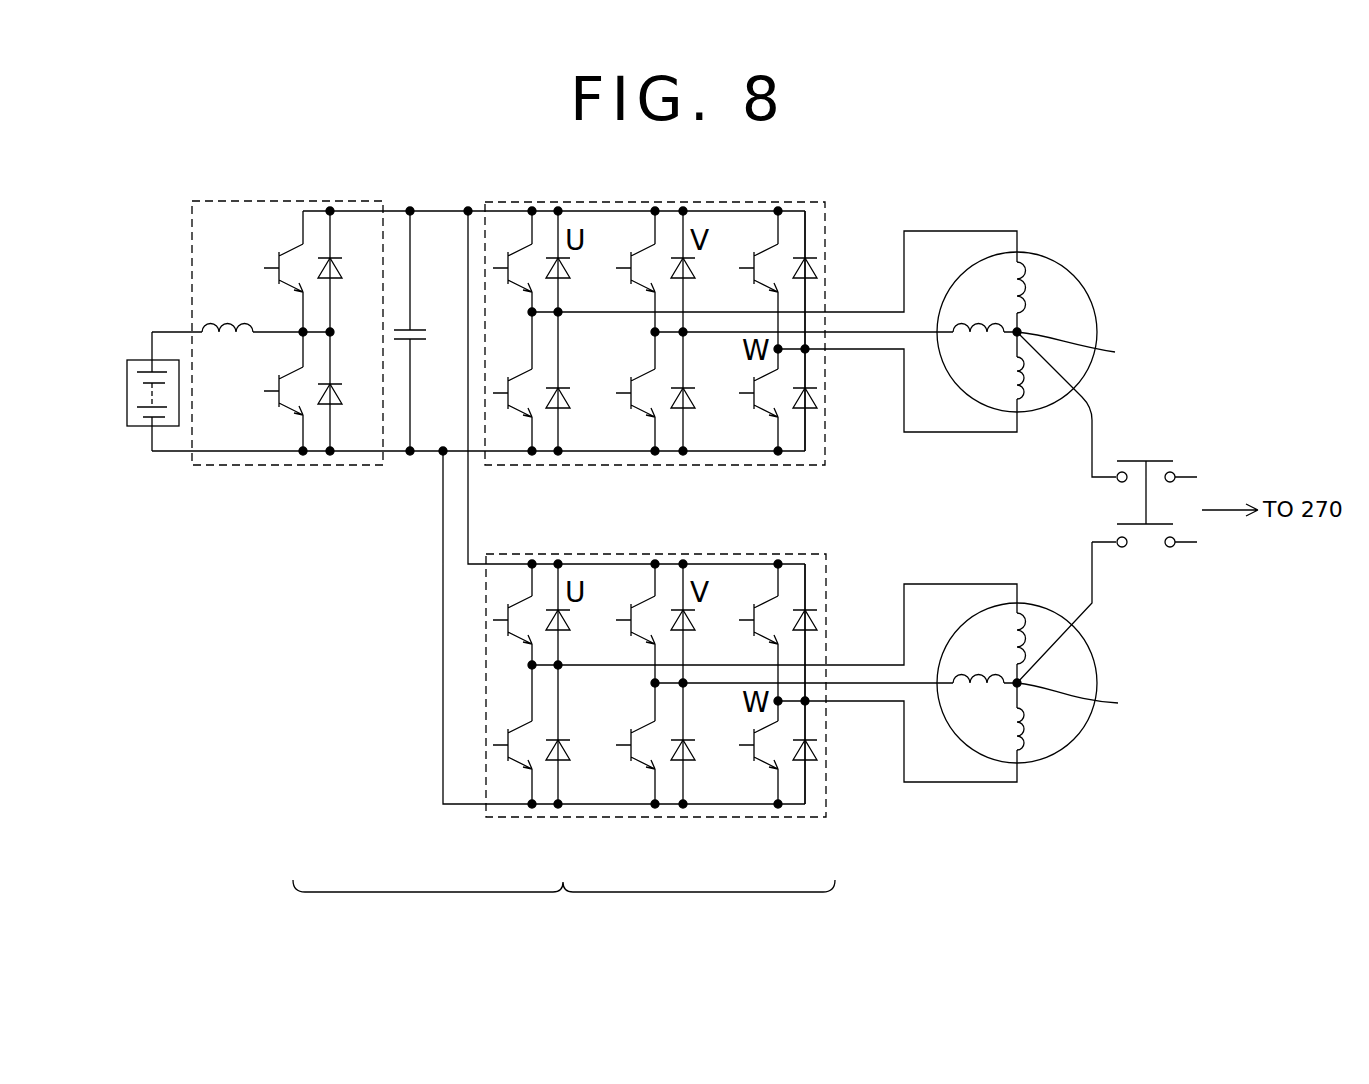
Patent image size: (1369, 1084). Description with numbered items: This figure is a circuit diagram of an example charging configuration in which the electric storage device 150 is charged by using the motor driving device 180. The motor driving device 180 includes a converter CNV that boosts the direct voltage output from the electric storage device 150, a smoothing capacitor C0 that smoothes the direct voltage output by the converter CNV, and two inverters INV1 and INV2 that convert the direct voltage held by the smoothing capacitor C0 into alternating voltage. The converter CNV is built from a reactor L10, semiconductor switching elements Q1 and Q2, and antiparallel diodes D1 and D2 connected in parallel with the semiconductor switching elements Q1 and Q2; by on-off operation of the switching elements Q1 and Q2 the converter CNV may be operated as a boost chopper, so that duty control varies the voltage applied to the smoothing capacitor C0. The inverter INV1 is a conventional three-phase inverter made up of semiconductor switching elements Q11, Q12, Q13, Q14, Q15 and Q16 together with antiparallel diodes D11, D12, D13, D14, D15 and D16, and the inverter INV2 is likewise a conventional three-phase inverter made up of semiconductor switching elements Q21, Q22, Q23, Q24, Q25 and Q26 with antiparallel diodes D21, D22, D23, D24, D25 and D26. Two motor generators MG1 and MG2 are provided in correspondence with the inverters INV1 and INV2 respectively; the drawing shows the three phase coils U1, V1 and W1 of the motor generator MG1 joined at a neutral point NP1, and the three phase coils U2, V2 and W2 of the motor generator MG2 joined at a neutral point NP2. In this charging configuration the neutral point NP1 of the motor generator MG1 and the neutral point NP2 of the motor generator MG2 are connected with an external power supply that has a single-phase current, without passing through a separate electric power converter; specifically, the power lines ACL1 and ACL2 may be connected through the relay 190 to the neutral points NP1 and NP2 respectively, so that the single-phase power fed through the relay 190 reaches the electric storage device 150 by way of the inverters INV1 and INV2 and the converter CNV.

The electric storage device 150 is at (127, 392).
The motor driving device 180 is at (564, 905).
The relay 190 is at (1157, 460).
The converter CNV is at (280, 200).
The inverter INV1 is at (810, 200).
The inverter INV2 is at (810, 553).
The reactor L10 is at (222, 318).
The smoothing capacitor C0 is at (422, 343).
The semiconductor switching element Q1 is at (298, 250).
The semiconductor switching element Q2 is at (298, 380).
The antiparallel diode D1 is at (334, 282).
The antiparallel diode D2 is at (334, 408).
The semiconductor switching element Q11 is at (524, 250).
The semiconductor switching element Q12 is at (525, 413).
The semiconductor switching element Q13 is at (649, 250).
The semiconductor switching element Q14 is at (650, 413).
The semiconductor switching element Q15 is at (773, 250).
The semiconductor switching element Q16 is at (775, 413).
The antiparallel diode D11 is at (562, 282).
The antiparallel diode D12 is at (562, 407).
The antiparallel diode D13 is at (687, 282).
The antiparallel diode D14 is at (687, 407).
The antiparallel diode D15 is at (810, 283).
The antiparallel diode D16 is at (810, 408).
The semiconductor switching element Q21 is at (524, 602).
The semiconductor switching element Q22 is at (525, 765).
The semiconductor switching element Q23 is at (649, 602).
The semiconductor switching element Q24 is at (650, 765).
The semiconductor switching element Q25 is at (773, 602).
The semiconductor switching element Q26 is at (775, 765).
The antiparallel diode D21 is at (562, 634).
The antiparallel diode D22 is at (562, 760).
The antiparallel diode D23 is at (687, 634).
The antiparallel diode D24 is at (687, 760).
The antiparallel diode D25 is at (810, 636).
The antiparallel diode D26 is at (810, 760).
The motor generator MG1 is at (1056, 258).
The motor generator MG2 is at (1056, 755).
The U-phase coil of MG1 U1 is at (1030, 295).
The V-phase coil of MG1 V1 is at (976, 320).
The W-phase coil of MG1 W1 is at (1012, 372).
The U-phase coil of MG2 U2 is at (1012, 632).
The V-phase coil of MG2 V2 is at (976, 690).
The W-phase coil of MG2 W2 is at (1028, 718).
The neutral point NP1 is at (1095, 352).
The neutral point NP2 is at (1096, 702).
The power line ACL1 is at (1197, 477).
The power line ACL2 is at (1197, 542).